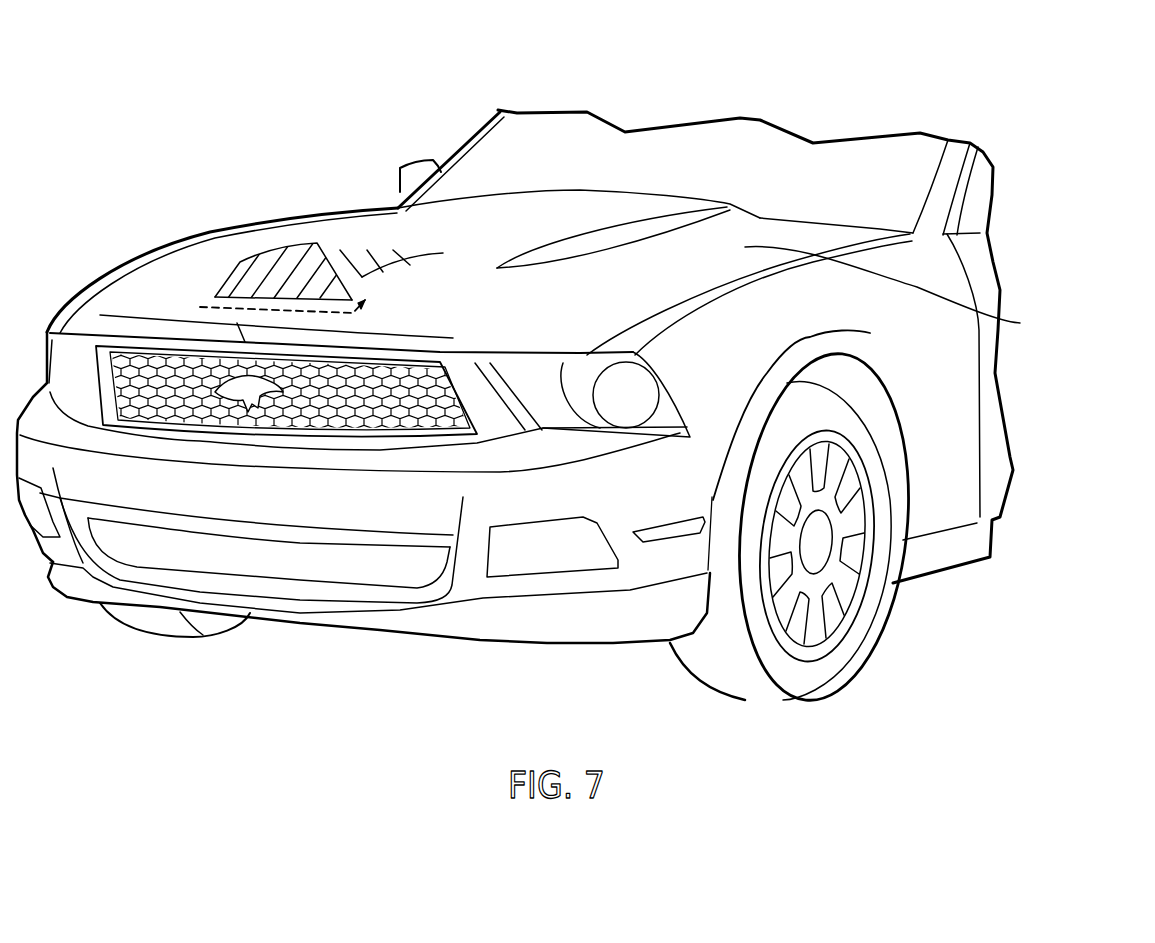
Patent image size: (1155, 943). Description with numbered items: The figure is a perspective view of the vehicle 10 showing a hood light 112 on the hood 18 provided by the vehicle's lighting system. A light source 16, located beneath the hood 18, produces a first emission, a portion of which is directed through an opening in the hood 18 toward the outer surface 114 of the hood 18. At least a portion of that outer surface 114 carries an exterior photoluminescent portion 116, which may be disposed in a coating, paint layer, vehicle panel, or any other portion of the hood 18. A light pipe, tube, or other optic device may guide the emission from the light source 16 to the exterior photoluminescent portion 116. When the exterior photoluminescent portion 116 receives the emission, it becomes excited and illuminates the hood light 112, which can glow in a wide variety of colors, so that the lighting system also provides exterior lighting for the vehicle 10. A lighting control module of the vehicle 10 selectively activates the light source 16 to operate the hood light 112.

The vehicle 10 is at (820, 92).
The light source 16 is at (197, 300).
The hood 18 is at (197, 257).
The hood light 112 is at (332, 238).
The outer surface 114 is at (1020, 323).
The exterior photoluminescent portion 116 is at (362, 277).